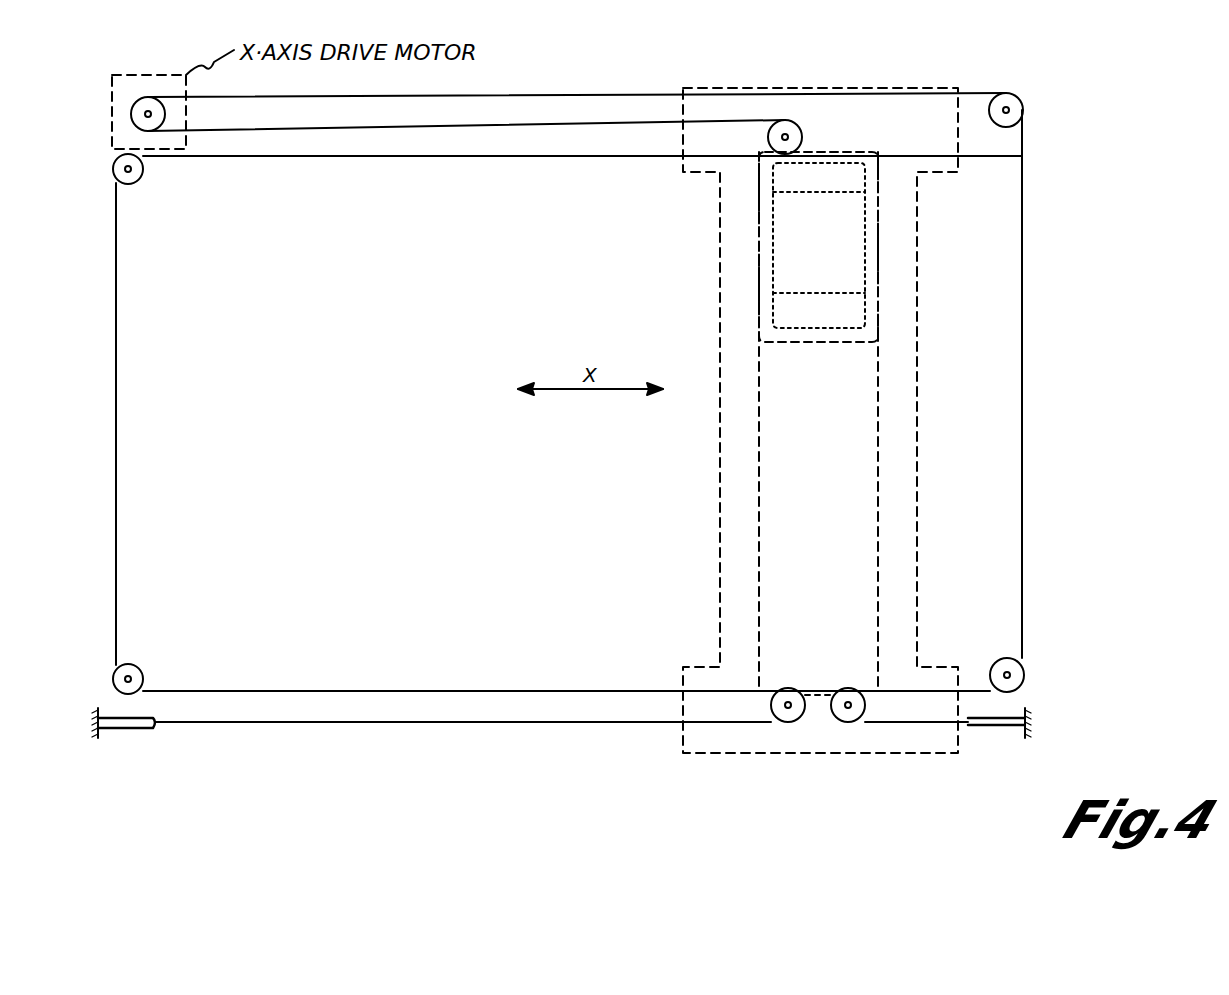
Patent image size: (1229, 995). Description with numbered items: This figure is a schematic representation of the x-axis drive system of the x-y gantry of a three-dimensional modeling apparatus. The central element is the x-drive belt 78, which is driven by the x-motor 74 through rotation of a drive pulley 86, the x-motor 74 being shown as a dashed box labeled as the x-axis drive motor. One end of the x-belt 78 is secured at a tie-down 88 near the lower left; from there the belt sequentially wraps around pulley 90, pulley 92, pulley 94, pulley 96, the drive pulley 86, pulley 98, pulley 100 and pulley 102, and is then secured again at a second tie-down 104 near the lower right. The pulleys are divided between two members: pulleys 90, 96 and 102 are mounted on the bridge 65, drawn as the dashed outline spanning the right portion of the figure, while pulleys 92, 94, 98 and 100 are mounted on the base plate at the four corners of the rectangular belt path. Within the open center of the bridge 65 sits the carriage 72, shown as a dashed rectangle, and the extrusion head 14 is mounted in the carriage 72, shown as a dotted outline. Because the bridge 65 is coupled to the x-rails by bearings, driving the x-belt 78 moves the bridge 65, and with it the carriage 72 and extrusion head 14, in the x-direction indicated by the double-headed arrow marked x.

The extrusion head 14 is at (853, 238).
The bridge 65 is at (692, 732).
The carriage 72 is at (872, 317).
The x-motor 74 is at (128, 75).
The x-drive belt 78 is at (116, 410).
The drive pulley 86 is at (152, 98).
The tie-down 88 is at (127, 732).
The pulley 90 is at (788, 720).
The pulley 92 is at (113, 679).
The pulley 94 is at (114, 166).
The pulley 96 is at (793, 131).
The pulley 98 is at (1020, 98).
The pulley 100 is at (1021, 668).
The pulley 102 is at (848, 720).
The tie-down 104 is at (1005, 730).